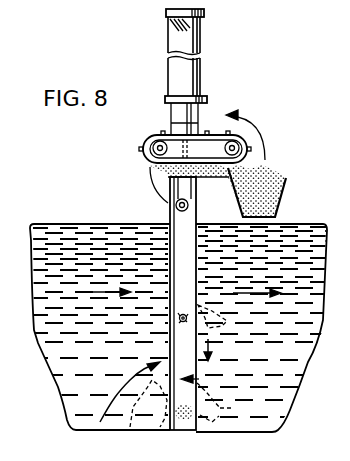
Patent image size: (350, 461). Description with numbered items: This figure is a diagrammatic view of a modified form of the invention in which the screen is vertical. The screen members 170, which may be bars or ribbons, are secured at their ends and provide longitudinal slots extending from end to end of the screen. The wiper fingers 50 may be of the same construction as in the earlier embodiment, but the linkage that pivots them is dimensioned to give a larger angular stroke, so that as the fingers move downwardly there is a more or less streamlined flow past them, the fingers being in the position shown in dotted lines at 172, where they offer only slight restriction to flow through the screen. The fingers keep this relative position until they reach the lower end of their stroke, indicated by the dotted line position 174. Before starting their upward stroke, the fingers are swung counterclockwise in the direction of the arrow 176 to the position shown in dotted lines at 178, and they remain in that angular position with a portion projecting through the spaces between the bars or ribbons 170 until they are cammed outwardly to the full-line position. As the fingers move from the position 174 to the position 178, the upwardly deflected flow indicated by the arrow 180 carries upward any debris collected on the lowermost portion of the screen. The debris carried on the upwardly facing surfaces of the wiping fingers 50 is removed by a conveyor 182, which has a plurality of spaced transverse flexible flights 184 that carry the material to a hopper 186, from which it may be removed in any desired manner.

The wiper fingers 50 is at (156, 187).
The screen members 170 is at (172, 276).
The dotted line position 172 is at (232, 328).
The dotted line position 174 is at (234, 406).
The arrow 176 is at (199, 382).
The dotted line position 178 is at (160, 418).
The arrow 180 is at (124, 386).
The conveyor 182 is at (216, 122).
The transverse flexible flights 184 is at (161, 132).
The hopper 186 is at (288, 190).